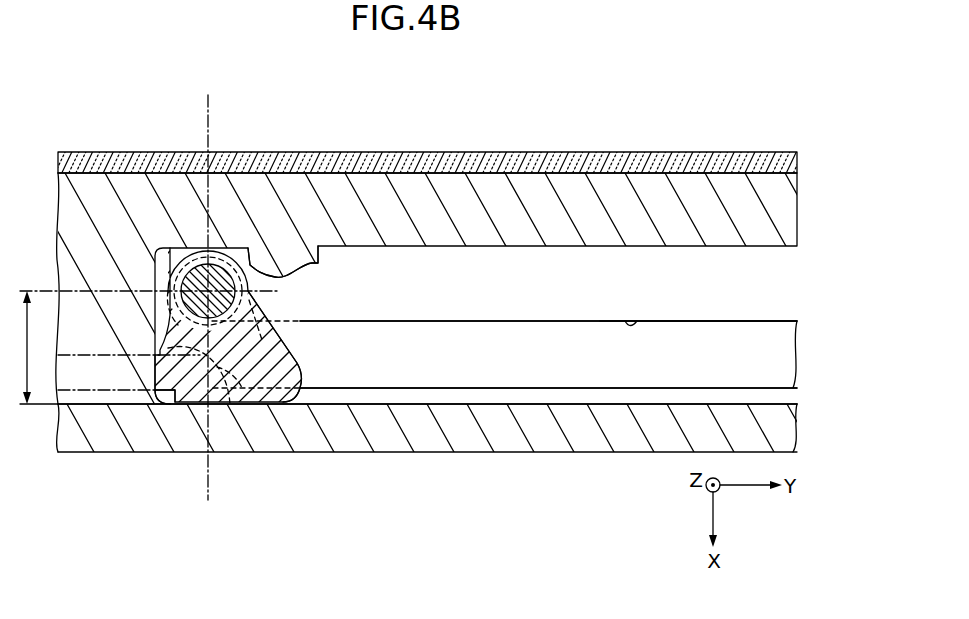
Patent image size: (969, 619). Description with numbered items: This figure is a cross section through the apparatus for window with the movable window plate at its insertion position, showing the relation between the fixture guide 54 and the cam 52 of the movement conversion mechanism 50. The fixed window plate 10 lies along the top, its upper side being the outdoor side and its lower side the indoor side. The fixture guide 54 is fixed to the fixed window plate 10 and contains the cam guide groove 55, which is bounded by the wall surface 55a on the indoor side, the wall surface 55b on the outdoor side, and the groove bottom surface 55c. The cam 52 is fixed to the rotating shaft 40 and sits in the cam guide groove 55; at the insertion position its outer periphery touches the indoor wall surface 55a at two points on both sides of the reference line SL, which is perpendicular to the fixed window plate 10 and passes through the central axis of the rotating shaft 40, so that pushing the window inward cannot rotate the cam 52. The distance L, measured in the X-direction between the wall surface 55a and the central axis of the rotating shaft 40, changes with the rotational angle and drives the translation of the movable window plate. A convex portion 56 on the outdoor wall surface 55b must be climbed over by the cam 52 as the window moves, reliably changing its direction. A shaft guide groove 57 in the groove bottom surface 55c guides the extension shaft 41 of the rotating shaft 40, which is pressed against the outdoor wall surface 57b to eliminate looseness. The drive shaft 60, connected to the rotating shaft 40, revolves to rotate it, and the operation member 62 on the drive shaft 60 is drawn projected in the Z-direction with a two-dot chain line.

The fixed window plate 10 is at (283, 165).
The rotating shaft 40 is at (206, 275).
The extension shaft 41 is at (184, 250).
The movement conversion mechanism 50 is at (623, 467).
The cam 52 is at (297, 362).
The fixture guide 54 is at (372, 190).
The cam guide groove 55 is at (538, 507).
The wall surface of the cam guide groove on the indoor side 55a is at (412, 400).
The wall surface of the cam guide groove on the outdoor side 55b is at (513, 247).
The groove bottom surface of the cam guide groove 55c is at (463, 396).
The convex portion 56 is at (320, 258).
The shaft guide groove 57 is at (670, 314).
The wall surface of the shaft guide groove on the outdoor side 57b is at (629, 318).
The drive shaft 60 is at (230, 405).
The operation member 62 is at (148, 398).
The reference line SL is at (218, 128).
The distance L is at (32, 347).